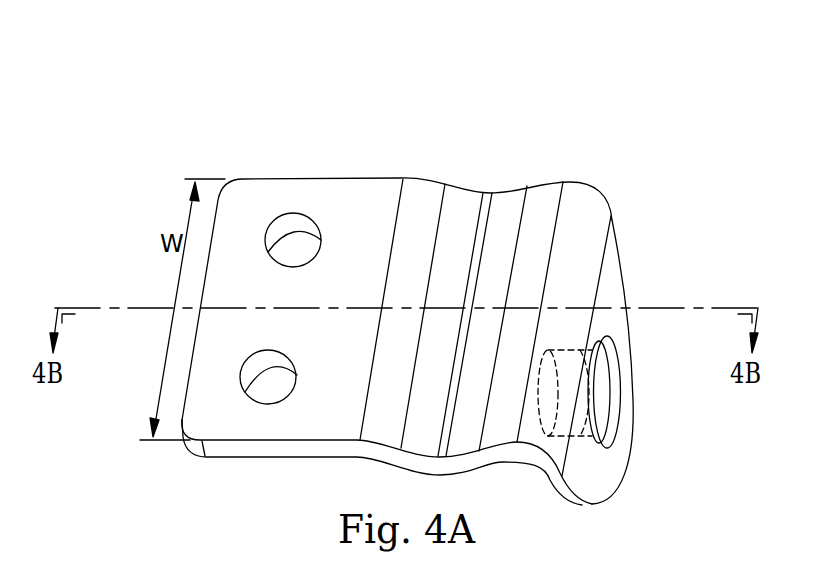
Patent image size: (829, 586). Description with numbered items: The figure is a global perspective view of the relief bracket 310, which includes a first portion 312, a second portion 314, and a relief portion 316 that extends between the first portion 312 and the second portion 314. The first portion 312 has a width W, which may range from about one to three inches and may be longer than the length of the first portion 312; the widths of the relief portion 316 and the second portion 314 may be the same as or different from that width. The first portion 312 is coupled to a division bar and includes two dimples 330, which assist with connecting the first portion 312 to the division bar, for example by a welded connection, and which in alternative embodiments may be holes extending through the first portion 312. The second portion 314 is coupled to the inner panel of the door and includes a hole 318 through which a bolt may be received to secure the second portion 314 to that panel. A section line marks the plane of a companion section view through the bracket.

The relief bracket 310 is at (678, 88).
The first portion 312 is at (325, 179).
The second portion 314 is at (620, 490).
The relief portion 316 is at (472, 192).
The hole 318 is at (608, 410).
The dimples 330 is at (279, 229).